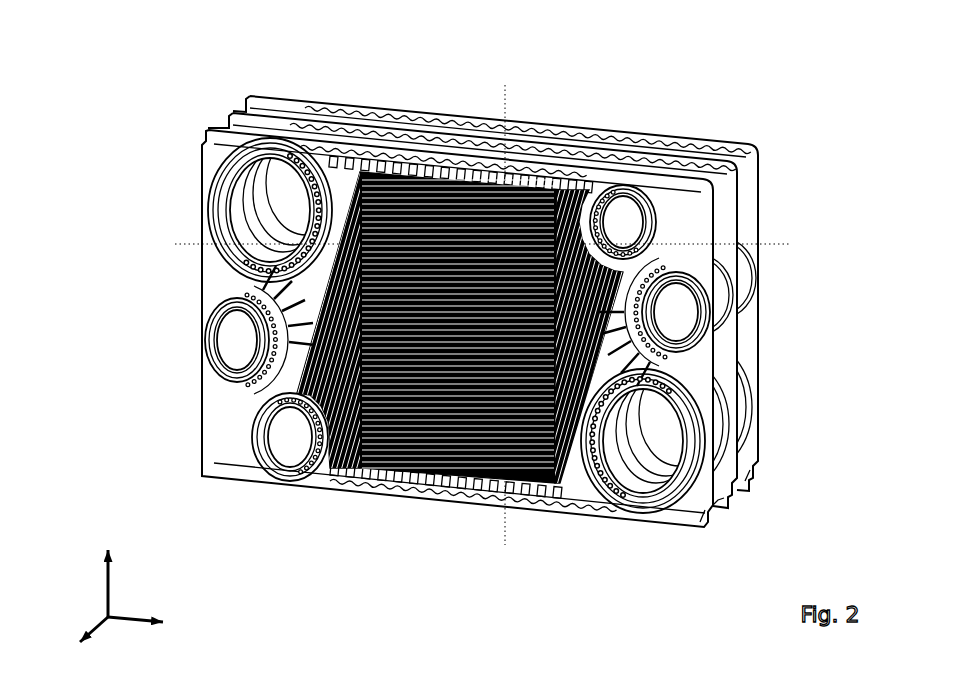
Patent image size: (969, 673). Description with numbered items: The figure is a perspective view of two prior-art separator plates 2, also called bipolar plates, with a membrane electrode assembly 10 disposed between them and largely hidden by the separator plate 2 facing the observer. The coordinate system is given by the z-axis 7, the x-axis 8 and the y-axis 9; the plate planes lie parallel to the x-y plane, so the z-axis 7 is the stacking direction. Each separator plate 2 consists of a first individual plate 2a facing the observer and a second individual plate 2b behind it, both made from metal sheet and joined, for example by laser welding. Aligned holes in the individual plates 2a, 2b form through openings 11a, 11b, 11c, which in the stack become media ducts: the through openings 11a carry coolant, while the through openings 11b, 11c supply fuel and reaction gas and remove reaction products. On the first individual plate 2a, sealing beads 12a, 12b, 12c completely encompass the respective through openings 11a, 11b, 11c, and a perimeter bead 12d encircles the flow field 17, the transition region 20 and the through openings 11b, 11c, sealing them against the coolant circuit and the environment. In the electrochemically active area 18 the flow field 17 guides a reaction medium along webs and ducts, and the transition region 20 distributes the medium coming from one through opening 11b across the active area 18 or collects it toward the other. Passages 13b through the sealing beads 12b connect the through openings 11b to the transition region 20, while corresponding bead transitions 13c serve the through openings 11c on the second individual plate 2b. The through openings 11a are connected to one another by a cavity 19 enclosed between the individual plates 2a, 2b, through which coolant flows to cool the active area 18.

The separator plate 2 is at (699, 522).
The first individual plate 2a is at (692, 205).
The second individual plate 2b is at (770, 178).
The z-axis 7 is at (96, 624).
The x-axis 8 is at (127, 616).
The y-axis 9 is at (108, 585).
The membrane electrode assembly 10 is at (721, 498).
The through opening 11a is at (230, 336).
The through opening 11b is at (626, 207).
The through opening 11c is at (277, 182).
The sealing bead 12a is at (231, 378).
The sealing bead 12b is at (608, 186).
The sealing bead 12c is at (250, 162).
The perimeter bead 12d is at (444, 155).
The passage 13b is at (616, 231).
The bead transition 13c is at (307, 206).
The flow field 17 is at (458, 327).
The electrochemically active area 18 is at (458, 324).
The cavity 19 is at (260, 348).
The transition region 20 is at (460, 341).